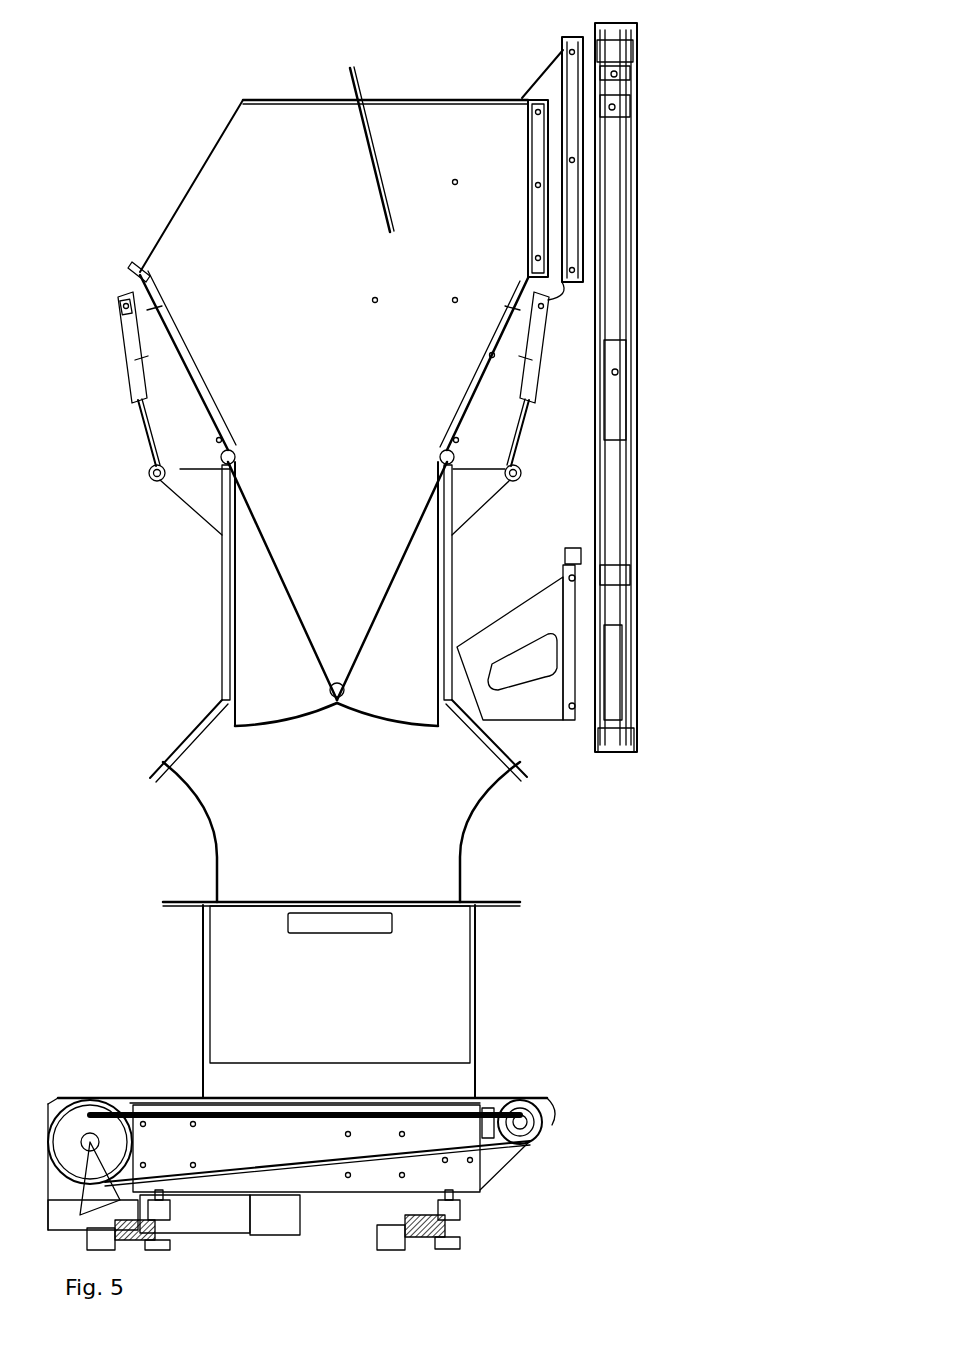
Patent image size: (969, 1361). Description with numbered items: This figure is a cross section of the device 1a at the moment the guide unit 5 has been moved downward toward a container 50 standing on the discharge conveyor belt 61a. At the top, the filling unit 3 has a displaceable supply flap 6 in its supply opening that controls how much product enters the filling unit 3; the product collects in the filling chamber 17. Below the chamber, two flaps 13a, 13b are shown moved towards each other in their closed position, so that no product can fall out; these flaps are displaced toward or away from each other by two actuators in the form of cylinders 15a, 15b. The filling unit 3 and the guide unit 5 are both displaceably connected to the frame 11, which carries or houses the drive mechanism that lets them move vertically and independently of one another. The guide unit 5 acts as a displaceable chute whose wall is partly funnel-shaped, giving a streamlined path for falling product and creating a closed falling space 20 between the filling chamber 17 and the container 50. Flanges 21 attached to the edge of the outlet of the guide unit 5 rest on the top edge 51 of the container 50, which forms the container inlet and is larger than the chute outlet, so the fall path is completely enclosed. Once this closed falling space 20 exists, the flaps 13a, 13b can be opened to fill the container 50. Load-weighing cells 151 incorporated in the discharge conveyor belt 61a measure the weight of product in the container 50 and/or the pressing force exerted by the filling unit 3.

The device 1a is at (150, 158).
The filling unit 3 is at (470, 130).
The supply flap 6 is at (375, 140).
The cylinder 15a is at (143, 422).
The cylinder 15b is at (545, 363).
The frame 11 is at (636, 540).
The filling chamber 17 is at (310, 582).
The flap 13a is at (253, 646).
The flap 13b is at (400, 690).
The falling space 20 is at (292, 820).
The guide unit 5 is at (483, 815).
The flanges 21 is at (507, 902).
The top edge 51 is at (478, 906).
The container 50 is at (415, 1016).
The discharge conveyor belt 61a is at (445, 1133).
The load-weighing cells 151 is at (135, 1238).